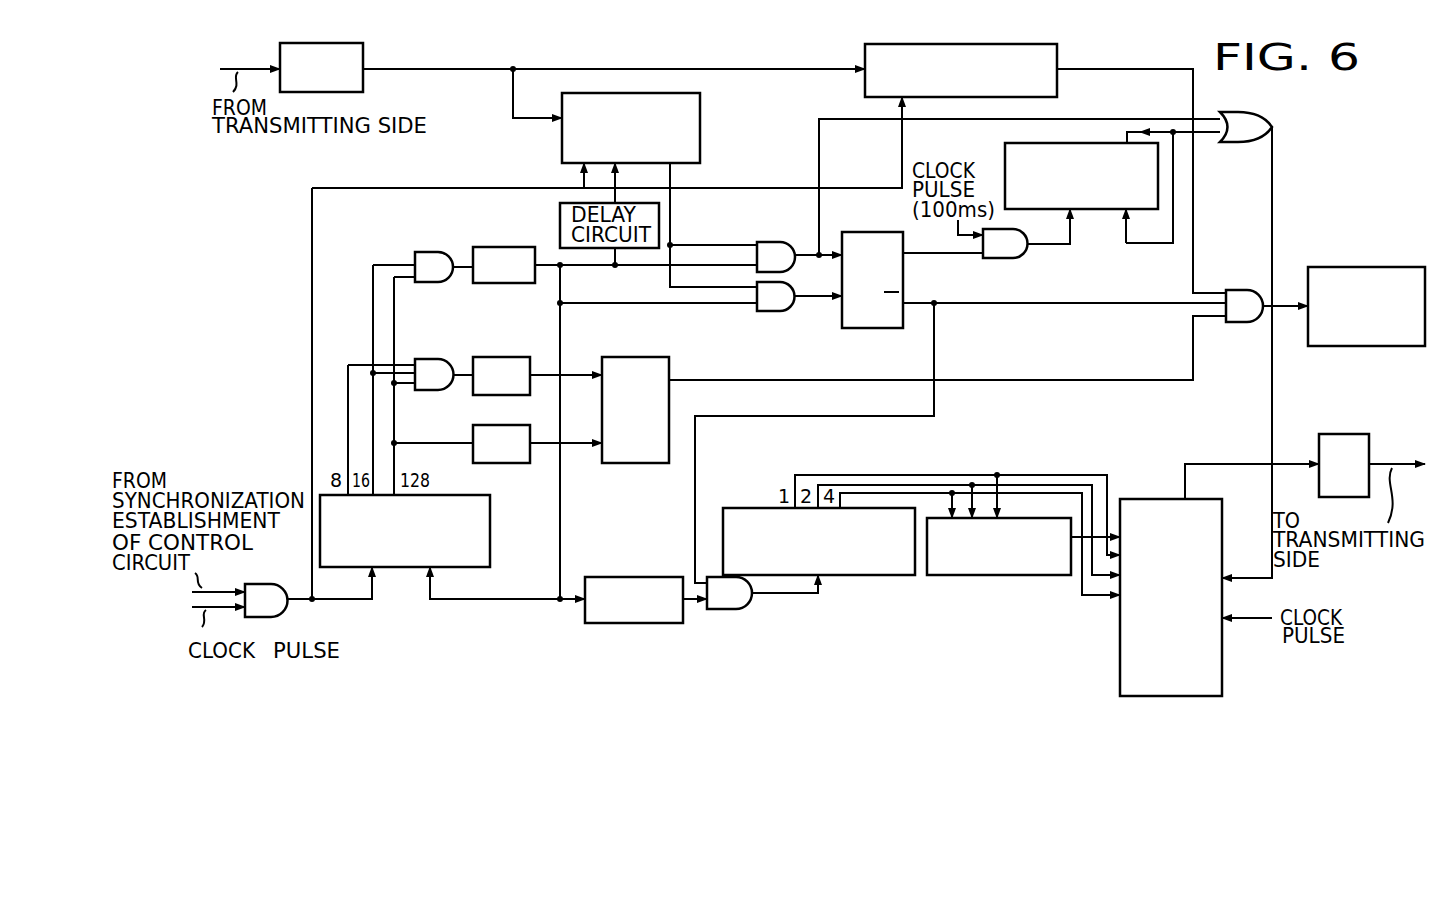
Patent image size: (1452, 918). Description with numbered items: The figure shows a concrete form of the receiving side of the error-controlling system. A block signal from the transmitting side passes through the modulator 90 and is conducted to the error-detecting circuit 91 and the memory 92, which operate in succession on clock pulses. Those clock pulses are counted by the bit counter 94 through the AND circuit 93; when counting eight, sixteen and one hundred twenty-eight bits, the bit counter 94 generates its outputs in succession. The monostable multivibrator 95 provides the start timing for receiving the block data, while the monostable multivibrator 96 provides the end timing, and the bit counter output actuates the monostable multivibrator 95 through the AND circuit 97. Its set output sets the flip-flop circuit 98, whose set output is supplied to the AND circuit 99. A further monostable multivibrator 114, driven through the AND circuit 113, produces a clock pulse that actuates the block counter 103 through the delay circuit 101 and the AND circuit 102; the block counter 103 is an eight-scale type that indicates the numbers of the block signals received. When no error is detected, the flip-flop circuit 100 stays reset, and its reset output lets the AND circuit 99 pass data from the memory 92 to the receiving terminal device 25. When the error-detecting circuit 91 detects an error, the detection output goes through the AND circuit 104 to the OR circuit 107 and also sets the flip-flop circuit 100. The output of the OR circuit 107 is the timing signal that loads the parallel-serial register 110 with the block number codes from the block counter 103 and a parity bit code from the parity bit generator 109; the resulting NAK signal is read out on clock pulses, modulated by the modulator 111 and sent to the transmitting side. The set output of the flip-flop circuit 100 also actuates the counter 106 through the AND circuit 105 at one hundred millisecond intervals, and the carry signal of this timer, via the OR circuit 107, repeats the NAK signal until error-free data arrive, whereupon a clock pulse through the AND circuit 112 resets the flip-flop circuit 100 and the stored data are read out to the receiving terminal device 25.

The receiving terminal device 25 is at (1365, 267).
The modulator 90 is at (364, 57).
The error-detecting circuit 91 is at (714, 110).
The memory 92 is at (1057, 63).
The AND circuit 93 is at (290, 603).
The bit counter 94 is at (491, 531).
The monostable multivibrator 95 is at (505, 358).
The monostable multivibrator 96 is at (523, 412).
The AND circuit 97 is at (428, 360).
The flip-flop circuit 98 is at (670, 370).
The AND circuit 99 is at (1253, 322).
The flip-flop circuit 100 is at (855, 232).
The delay circuit 101 is at (632, 577).
The AND circuit 102 is at (747, 610).
The block counter 103 is at (878, 575).
The AND circuit 104 is at (768, 242).
The AND circuit 105 is at (1022, 260).
The counter 106 is at (1062, 131).
The OR circuit 107 is at (1253, 108).
The parity bit generator 109 is at (1033, 575).
The parallel-serial register 110 is at (1118, 648).
The modulator 111 is at (1350, 434).
The AND circuit 112 is at (792, 298).
The AND circuit 113 is at (431, 252).
The monostable multivibrator 114 is at (505, 247).